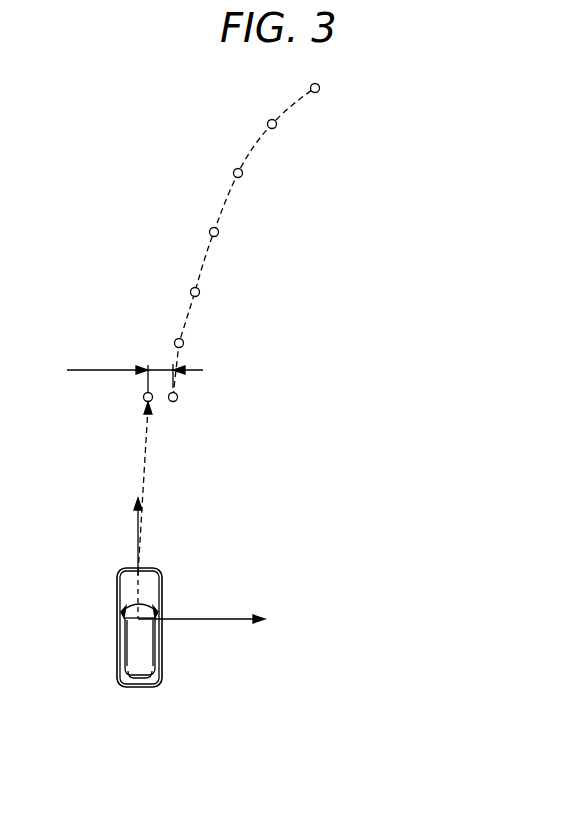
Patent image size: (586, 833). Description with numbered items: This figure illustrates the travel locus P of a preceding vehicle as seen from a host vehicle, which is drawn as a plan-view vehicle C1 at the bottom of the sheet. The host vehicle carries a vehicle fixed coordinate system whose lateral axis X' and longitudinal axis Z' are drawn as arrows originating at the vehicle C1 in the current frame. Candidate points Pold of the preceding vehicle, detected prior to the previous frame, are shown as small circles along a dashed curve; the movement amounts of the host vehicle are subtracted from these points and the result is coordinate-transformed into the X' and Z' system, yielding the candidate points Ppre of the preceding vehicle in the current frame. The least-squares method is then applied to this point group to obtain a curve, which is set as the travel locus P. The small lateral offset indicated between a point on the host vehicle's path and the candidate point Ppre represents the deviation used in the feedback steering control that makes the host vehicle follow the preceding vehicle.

The travel locus P is at (217, 207).
The candidate points detected prior to the previous frame Pold is at (207, 347).
The candidate points in the current frame Ppre is at (202, 398).
The vehicle fixed coordinate system Z' axis Z' is at (125, 533).
The vehicle fixed coordinate system X' axis X' is at (215, 618).
The vehicle C1 is at (162, 655).